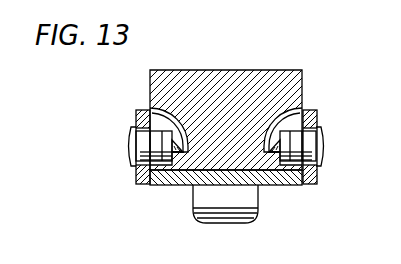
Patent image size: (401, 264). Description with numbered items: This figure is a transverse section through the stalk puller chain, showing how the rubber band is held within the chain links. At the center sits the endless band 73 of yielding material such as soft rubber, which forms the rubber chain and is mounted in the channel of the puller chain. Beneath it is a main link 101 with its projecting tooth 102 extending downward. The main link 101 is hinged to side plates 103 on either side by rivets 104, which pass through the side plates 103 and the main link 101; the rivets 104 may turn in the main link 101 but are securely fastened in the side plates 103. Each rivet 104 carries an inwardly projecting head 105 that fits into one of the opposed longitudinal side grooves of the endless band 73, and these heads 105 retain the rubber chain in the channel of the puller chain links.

The endless band 73 is at (240, 70).
The main link 101 is at (271, 187).
The projecting tooth 102 is at (203, 198).
The side plate 103 is at (136, 179).
The rivet 104 is at (129, 140).
The inwardly projecting head 105 is at (154, 112).